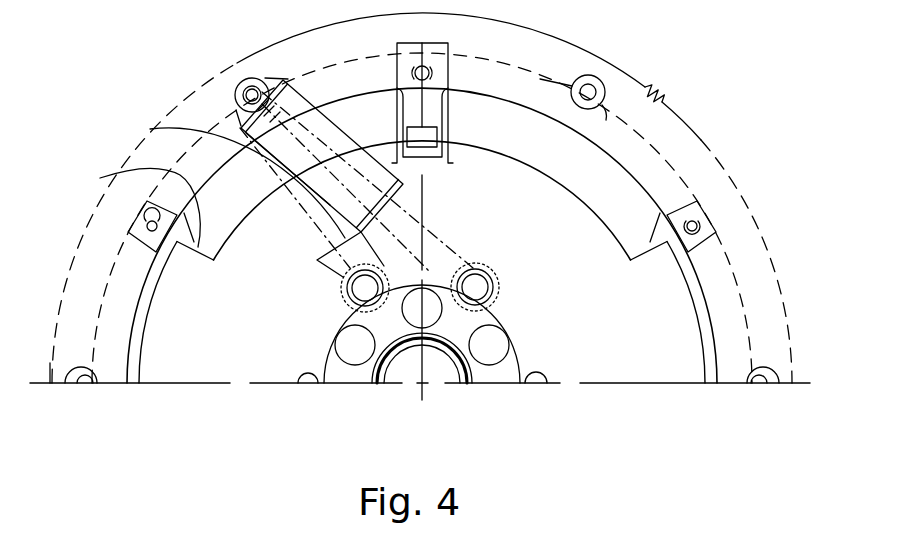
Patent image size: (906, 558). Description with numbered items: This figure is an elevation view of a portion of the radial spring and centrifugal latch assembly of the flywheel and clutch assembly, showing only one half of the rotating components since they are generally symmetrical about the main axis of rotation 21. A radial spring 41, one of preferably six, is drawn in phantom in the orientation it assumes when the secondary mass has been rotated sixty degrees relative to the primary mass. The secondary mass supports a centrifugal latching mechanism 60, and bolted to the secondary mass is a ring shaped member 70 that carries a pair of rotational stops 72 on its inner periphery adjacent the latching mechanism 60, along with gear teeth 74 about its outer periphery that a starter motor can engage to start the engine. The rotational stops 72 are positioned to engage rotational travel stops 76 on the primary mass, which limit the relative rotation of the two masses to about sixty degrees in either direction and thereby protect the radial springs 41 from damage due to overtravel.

The main axis of rotation 21 is at (424, 385).
The radial spring 41 is at (150, 129).
The centrifugal latching mechanism 60 is at (440, 81).
The ring shaped member 70 is at (665, 160).
The rotational stop 72 is at (405, 133).
The gear teeth 74 is at (668, 100).
The rotational travel stop 76 is at (695, 197).